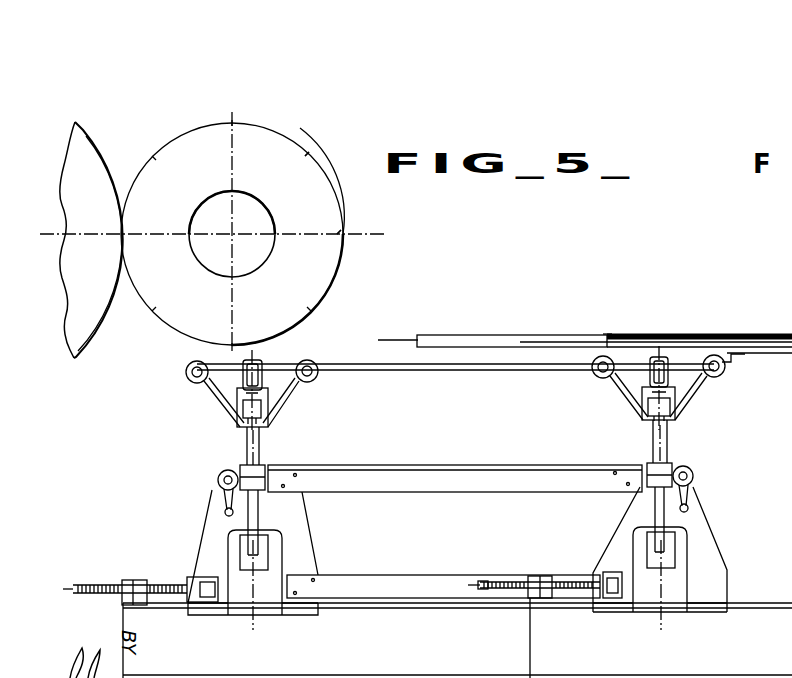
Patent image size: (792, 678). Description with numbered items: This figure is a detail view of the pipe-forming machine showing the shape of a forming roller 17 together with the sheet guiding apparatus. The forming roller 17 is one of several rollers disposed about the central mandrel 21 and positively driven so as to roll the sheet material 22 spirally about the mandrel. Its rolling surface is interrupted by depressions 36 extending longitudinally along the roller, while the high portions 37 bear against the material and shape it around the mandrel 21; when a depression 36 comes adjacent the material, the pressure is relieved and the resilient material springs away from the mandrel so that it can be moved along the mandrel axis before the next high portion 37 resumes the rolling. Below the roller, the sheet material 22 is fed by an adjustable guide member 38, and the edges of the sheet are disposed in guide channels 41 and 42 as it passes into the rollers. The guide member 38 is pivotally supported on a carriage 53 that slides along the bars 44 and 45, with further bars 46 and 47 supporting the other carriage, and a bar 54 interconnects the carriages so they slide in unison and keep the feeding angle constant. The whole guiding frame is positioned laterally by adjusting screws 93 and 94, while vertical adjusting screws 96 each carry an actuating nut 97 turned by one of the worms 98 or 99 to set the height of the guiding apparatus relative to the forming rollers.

The forming roller 17 is at (307, 273).
The central mandrel 21 is at (83, 334).
The sheet material 22 is at (103, 314).
The depression 36 is at (336, 213).
The high portion 37 is at (299, 156).
The guide member 38 is at (682, 322).
The guide channel 41 is at (767, 333).
The guide channel 42 is at (607, 335).
The track or bar 44 is at (757, 387).
The track or bar 45 is at (603, 375).
The track or bar 46 is at (310, 360).
The track or bar 47 is at (190, 379).
The carriage 53 is at (710, 350).
The bar 54 is at (260, 362).
The adjusting screw 93 is at (105, 584).
The adjusting screw 94 is at (503, 584).
The adjusting screw 96 is at (248, 449).
The actuating nut 97 is at (262, 477).
The worm 98 is at (696, 476).
The worm 99 is at (216, 473).